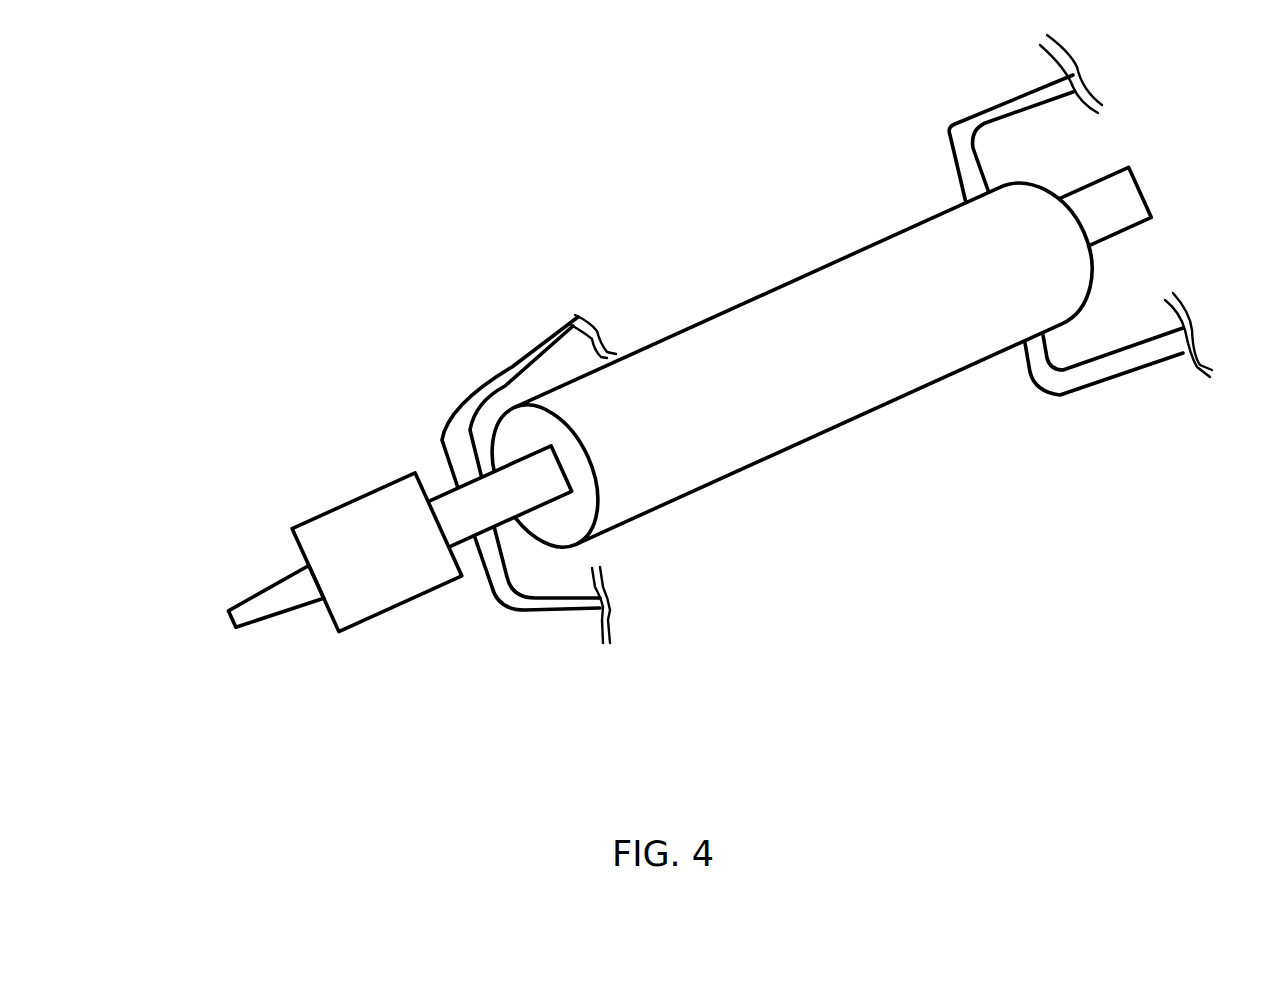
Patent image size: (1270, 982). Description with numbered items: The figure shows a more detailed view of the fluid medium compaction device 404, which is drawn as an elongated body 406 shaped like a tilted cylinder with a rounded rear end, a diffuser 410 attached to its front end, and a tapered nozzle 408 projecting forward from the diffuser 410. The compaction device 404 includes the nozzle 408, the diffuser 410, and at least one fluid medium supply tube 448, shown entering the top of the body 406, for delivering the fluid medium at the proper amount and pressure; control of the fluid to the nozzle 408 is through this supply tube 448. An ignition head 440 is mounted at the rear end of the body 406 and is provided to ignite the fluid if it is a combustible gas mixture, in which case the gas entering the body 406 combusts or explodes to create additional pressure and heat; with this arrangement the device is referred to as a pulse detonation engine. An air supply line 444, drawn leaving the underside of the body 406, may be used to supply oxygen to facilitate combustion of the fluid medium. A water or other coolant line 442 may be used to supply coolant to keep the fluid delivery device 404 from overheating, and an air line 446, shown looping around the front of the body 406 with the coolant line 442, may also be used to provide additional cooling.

The compaction device 404 is at (705, 374).
The body 406 is at (817, 283).
The nozzle 408 is at (265, 595).
The diffuser 410 is at (352, 517).
The ignition head 440 is at (1122, 205).
The coolant line 442 is at (540, 597).
The air supply line 444 is at (1075, 383).
The air line 446 is at (522, 367).
The fluid medium supply tube 448 is at (987, 119).